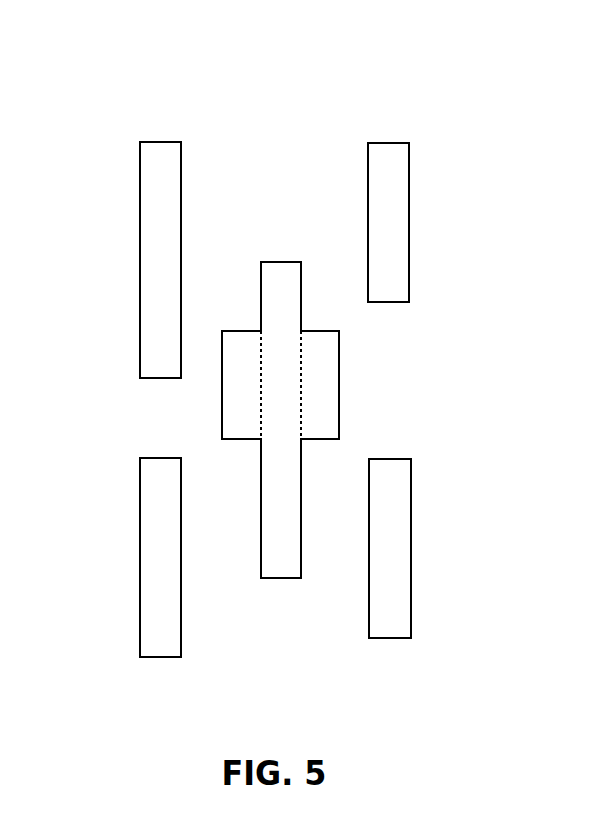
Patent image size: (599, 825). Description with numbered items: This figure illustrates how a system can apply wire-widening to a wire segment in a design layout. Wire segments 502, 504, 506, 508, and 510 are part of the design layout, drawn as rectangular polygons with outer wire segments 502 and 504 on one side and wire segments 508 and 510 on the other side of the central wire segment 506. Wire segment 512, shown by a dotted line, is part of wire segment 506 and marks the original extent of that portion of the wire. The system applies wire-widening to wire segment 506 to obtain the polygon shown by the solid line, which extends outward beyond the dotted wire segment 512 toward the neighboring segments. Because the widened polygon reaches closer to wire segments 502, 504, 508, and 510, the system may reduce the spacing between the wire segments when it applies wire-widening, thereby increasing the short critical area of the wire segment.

The wire segment 502 is at (160, 244).
The wire segment 504 is at (160, 572).
The wire segment 506 is at (280, 404).
The wire segment 508 is at (388, 208).
The wire segment 510 is at (390, 574).
The wire segment 512 is at (308, 437).